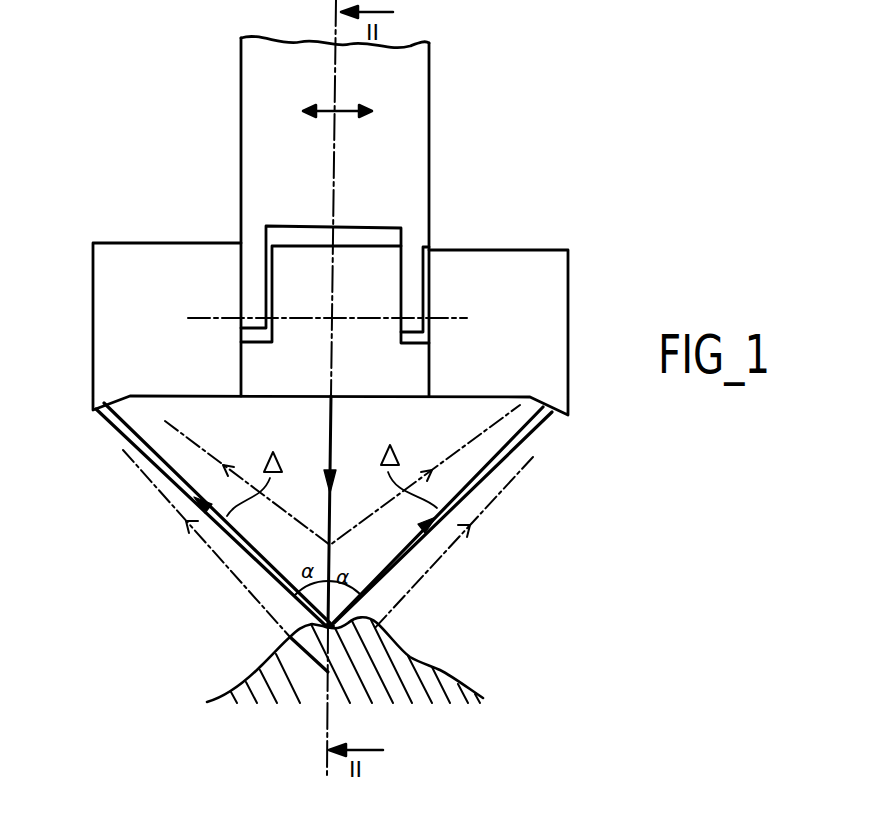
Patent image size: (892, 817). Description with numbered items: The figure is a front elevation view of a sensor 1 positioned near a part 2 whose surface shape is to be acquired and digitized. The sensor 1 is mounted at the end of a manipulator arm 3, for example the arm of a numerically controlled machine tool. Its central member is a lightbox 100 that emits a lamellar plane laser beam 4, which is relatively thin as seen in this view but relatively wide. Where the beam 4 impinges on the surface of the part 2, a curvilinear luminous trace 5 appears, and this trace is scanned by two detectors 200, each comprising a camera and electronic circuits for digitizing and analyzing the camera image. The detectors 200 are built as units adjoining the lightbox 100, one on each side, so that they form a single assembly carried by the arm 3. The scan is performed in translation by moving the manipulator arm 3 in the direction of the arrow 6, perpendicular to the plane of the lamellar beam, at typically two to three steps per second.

The sensor 1 is at (568, 166).
The part 2 is at (441, 672).
The manipulator arm 3 is at (415, 119).
The lamellar plane laser beam 4 is at (331, 494).
The curvilinear luminous trace 5 is at (352, 619).
The arrow 6 is at (328, 104).
The lightbox 100 is at (383, 268).
The detectors 200 is at (155, 258).